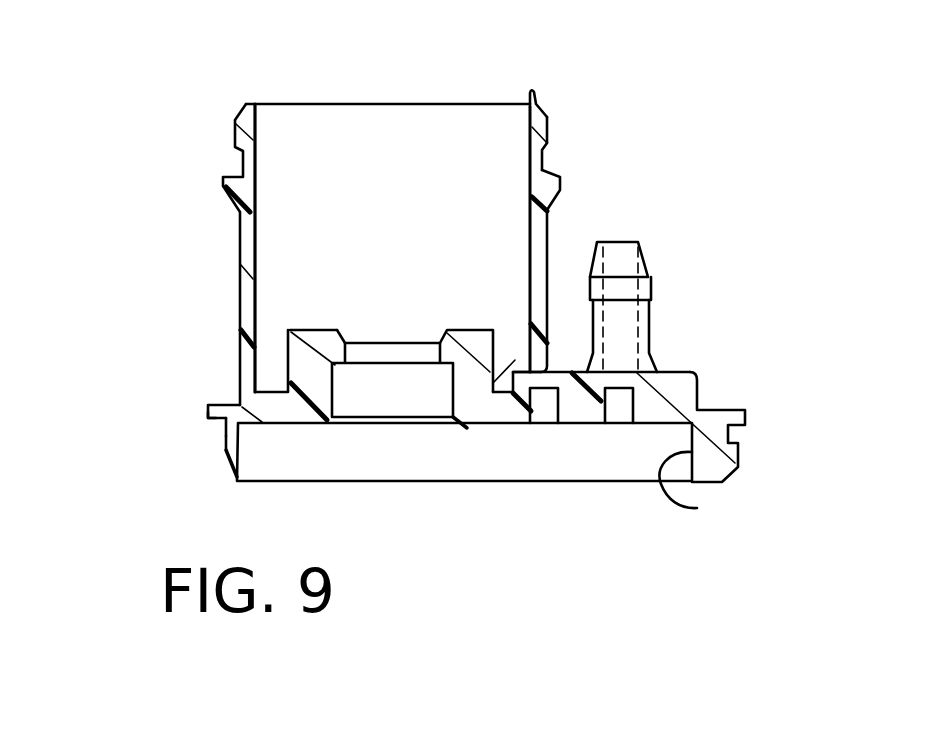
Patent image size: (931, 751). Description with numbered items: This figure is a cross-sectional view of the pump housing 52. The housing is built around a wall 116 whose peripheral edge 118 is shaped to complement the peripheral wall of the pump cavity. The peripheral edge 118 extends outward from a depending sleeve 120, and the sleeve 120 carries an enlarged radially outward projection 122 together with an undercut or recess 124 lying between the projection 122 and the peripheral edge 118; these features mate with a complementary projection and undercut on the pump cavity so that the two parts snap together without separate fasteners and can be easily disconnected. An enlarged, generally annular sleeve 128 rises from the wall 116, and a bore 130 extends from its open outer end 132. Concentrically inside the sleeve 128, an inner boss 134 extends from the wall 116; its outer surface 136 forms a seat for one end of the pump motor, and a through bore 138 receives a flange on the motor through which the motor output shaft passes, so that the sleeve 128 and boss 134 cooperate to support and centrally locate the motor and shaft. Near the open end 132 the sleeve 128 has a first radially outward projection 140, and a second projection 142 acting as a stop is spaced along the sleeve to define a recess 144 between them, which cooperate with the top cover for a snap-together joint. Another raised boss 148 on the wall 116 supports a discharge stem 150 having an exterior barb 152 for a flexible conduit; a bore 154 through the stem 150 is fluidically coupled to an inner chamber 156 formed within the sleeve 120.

The pump housing 52 is at (178, 167).
The wall 116 is at (225, 405).
The peripheral edge 118 is at (210, 417).
The depending sleeve 120 is at (220, 445).
The radially outward projection 122 is at (220, 452).
The recess 124 is at (225, 432).
The annular sleeve 128 is at (237, 242).
The bore 130 is at (525, 168).
The open outer end 132 is at (532, 92).
The inner boss 134 is at (288, 350).
The outer surface 136 is at (313, 330).
The through bore 138 is at (350, 330).
The first projection 140 is at (552, 132).
The second projection 142 is at (560, 190).
The recess 144 is at (543, 163).
The raised boss 148 is at (698, 379).
The discharge stem 150 is at (659, 288).
The exterior barb 152 is at (590, 290).
The bore 154 is at (627, 325).
The inner chamber 156 is at (715, 493).